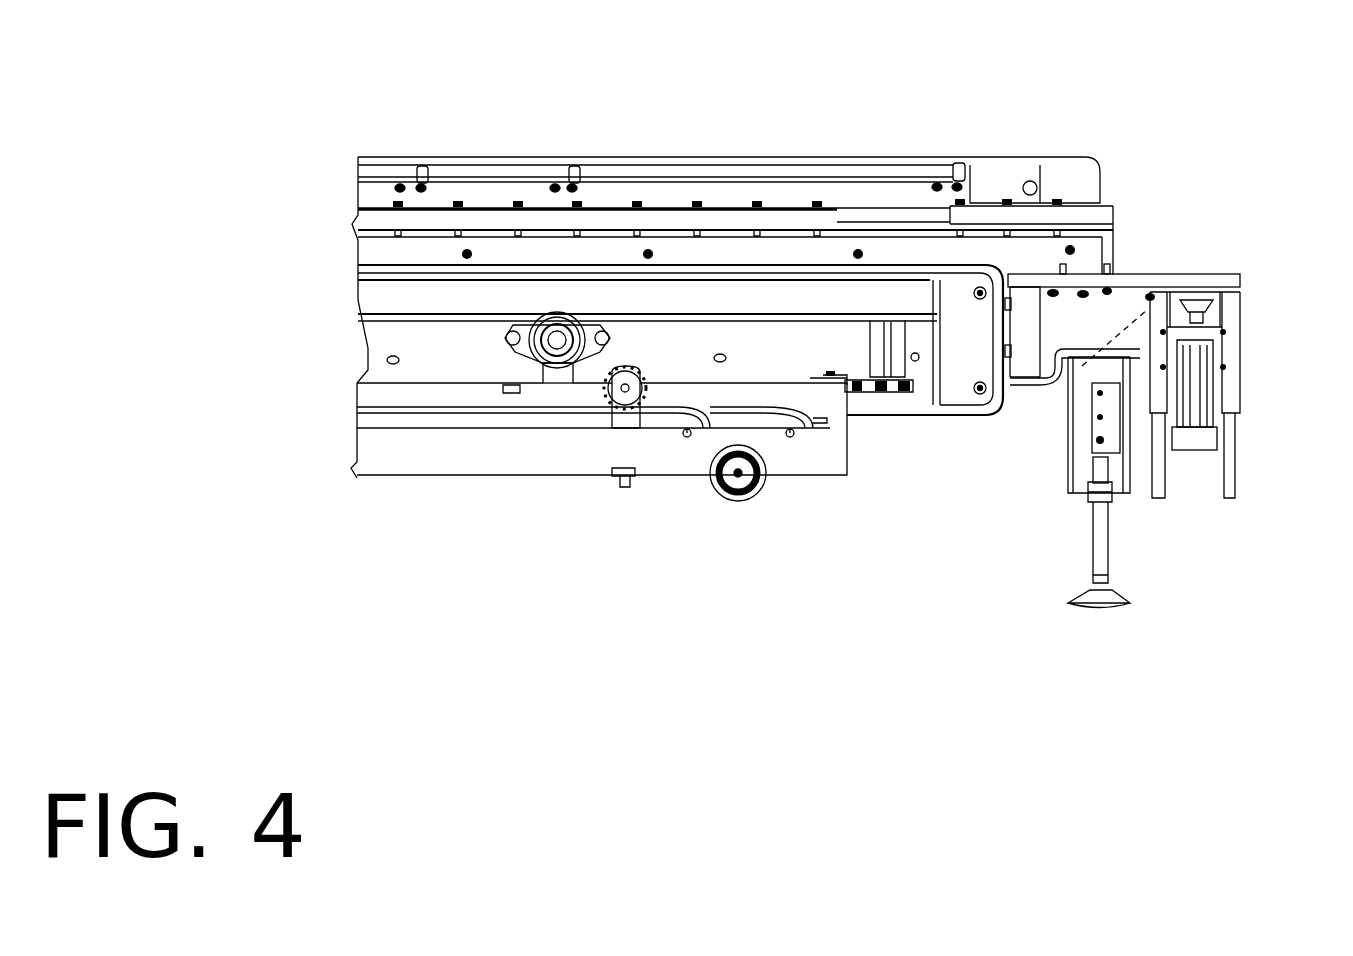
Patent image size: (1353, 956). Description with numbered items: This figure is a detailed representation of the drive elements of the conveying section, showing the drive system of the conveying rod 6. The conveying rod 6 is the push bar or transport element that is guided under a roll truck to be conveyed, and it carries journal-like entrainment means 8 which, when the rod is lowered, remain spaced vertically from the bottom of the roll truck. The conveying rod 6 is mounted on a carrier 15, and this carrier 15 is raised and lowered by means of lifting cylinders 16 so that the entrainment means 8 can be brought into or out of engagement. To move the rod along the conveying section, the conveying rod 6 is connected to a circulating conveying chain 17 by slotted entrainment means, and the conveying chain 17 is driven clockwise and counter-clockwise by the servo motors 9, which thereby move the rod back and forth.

The conveying rod 6 is at (572, 180).
The journal-like entrainment means 8 is at (574, 174).
The servo motors 9 is at (557, 340).
The carrier 15 is at (1082, 260).
The lifting cylinders 16 is at (1197, 390).
The circulating conveying chain 17 is at (872, 410).